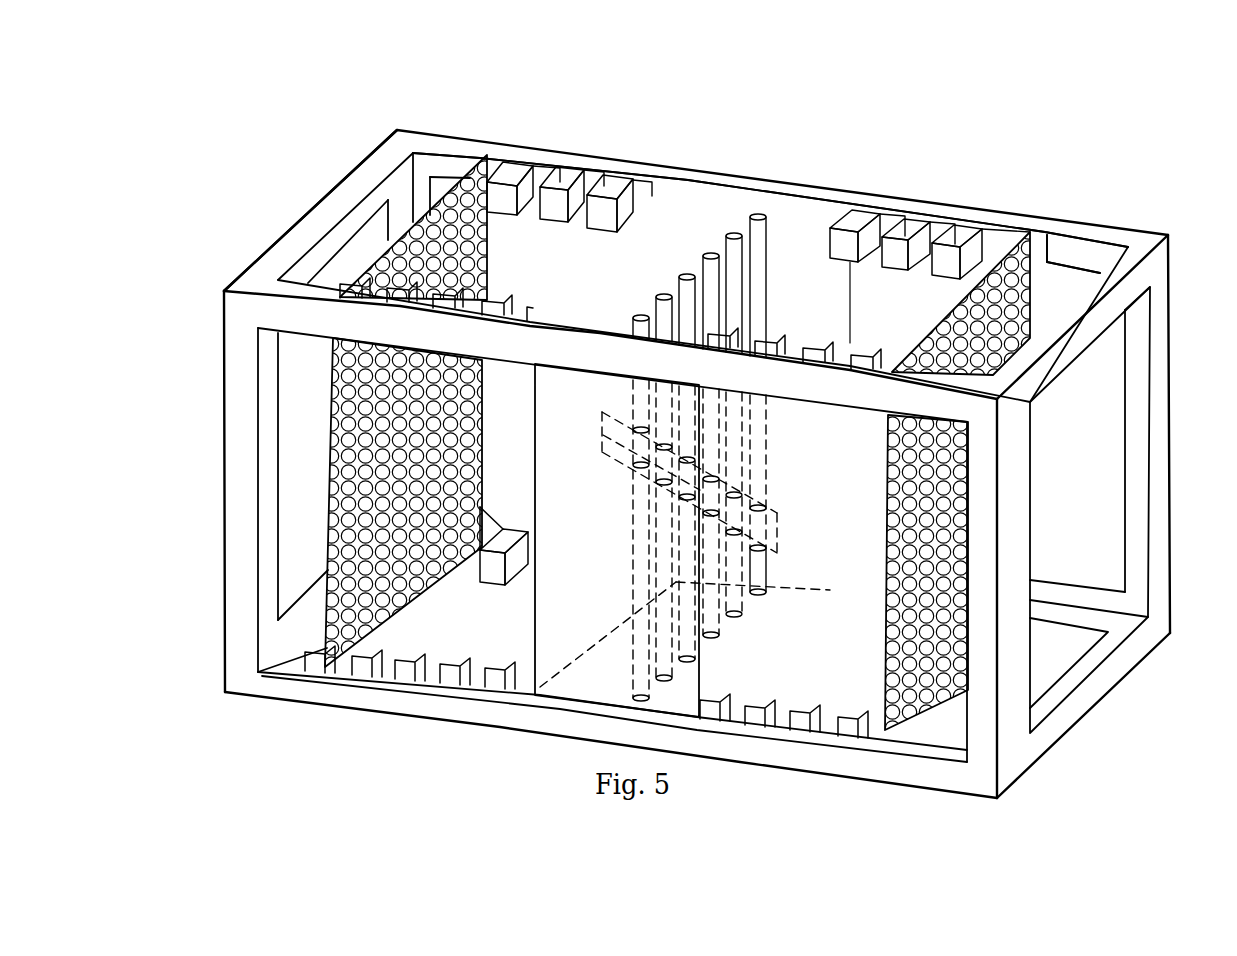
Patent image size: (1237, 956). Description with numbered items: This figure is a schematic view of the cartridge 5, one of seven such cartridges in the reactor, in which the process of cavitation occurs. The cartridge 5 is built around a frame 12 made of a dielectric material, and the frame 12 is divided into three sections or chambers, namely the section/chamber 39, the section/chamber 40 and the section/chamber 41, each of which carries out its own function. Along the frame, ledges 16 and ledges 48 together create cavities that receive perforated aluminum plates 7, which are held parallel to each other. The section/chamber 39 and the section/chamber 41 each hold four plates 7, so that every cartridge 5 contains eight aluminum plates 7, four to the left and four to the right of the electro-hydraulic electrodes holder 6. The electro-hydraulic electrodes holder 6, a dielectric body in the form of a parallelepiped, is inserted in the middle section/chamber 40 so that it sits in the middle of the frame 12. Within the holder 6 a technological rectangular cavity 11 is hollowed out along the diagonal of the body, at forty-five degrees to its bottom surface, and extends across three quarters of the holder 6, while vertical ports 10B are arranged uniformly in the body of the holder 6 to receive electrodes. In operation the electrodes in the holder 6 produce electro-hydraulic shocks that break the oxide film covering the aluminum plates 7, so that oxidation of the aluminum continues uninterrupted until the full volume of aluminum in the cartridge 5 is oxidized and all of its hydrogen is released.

The cartridge 5 is at (1150, 428).
The frame 12 is at (378, 147).
The section/chamber 39 is at (440, 188).
The ledge 16 is at (593, 177).
The ledge 48 is at (618, 182).
The electro-hydraulic electrodes holder 6 is at (690, 277).
The section/chamber 40 is at (773, 190).
The aluminum plate 7 is at (1028, 232).
The section/chamber 41 is at (1062, 293).
The technological rectangular cavity 11 is at (602, 437).
The vertical port 10B is at (638, 700).